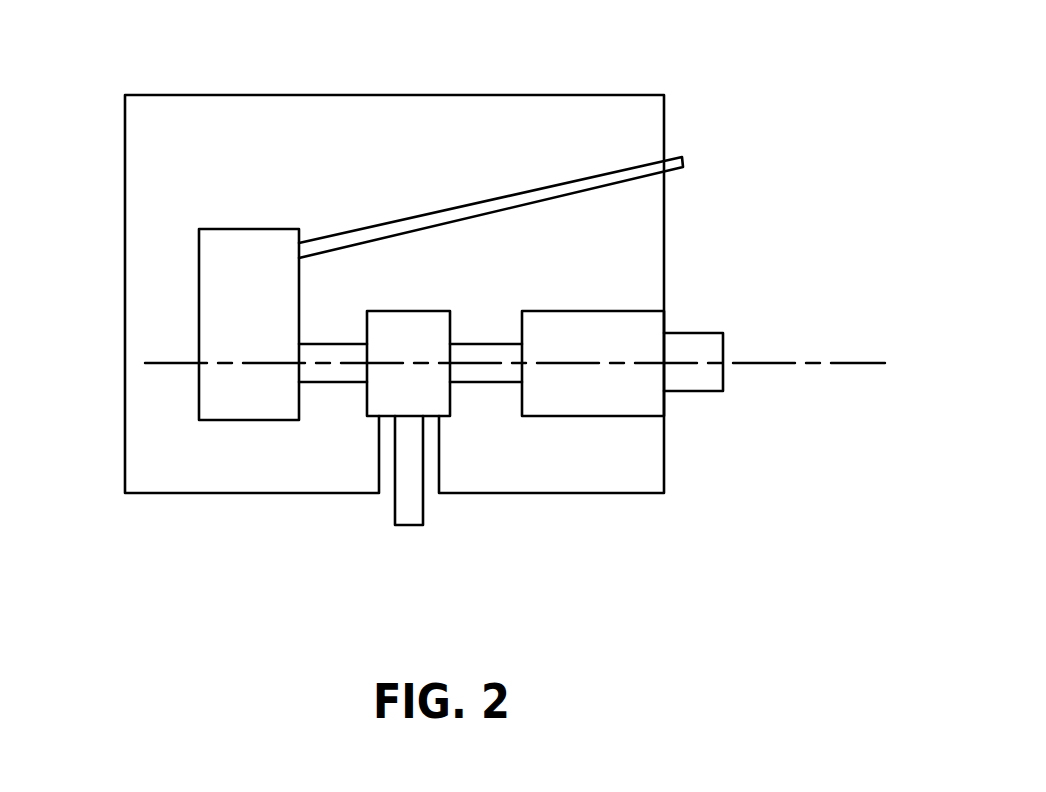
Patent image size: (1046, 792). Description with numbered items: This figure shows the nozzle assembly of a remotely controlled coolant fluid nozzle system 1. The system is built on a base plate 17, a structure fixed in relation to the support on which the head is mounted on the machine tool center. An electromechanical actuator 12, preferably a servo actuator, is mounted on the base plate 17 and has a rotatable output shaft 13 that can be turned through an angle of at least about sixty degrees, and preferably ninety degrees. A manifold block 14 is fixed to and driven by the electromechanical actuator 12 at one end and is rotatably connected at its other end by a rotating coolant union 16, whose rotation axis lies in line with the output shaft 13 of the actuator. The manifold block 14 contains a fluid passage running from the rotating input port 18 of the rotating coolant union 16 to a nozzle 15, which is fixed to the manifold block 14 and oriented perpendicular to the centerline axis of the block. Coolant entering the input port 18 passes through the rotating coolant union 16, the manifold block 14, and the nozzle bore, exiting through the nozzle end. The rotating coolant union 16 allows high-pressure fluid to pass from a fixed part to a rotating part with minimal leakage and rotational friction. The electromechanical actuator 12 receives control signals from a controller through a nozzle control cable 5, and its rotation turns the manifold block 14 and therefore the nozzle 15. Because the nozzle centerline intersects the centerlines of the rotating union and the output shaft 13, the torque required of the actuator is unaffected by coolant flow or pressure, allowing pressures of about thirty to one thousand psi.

The remotely controlled coolant fluid nozzle system 1 is at (478, 95).
The nozzle control cable 5 is at (538, 195).
The electromechanical actuator 12 is at (227, 290).
The rotatable output shaft 13 is at (335, 368).
The manifold block 14 is at (439, 389).
The nozzle 15 is at (412, 492).
The rotating coolant union 16 is at (638, 402).
The base plate 17 is at (172, 132).
The rotating input port 18 is at (738, 346).